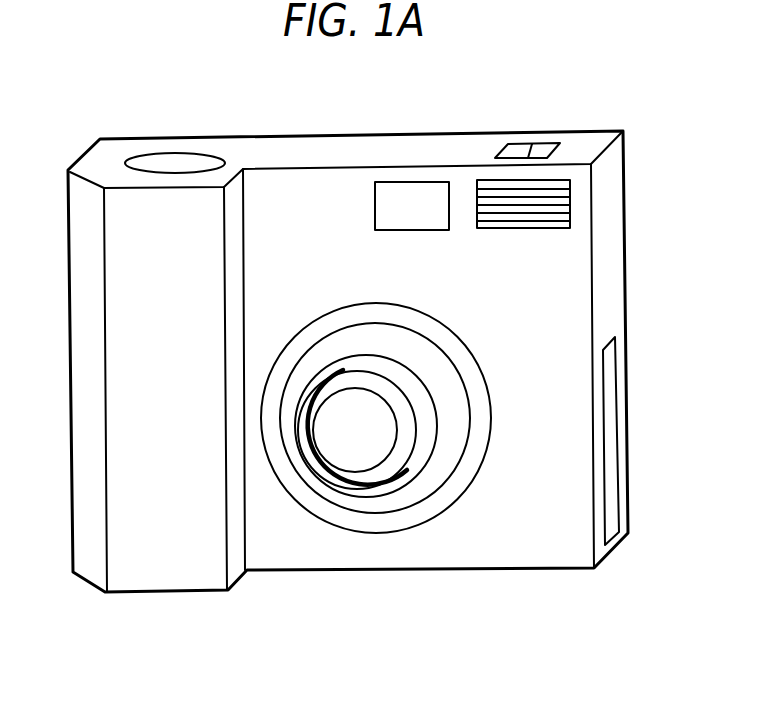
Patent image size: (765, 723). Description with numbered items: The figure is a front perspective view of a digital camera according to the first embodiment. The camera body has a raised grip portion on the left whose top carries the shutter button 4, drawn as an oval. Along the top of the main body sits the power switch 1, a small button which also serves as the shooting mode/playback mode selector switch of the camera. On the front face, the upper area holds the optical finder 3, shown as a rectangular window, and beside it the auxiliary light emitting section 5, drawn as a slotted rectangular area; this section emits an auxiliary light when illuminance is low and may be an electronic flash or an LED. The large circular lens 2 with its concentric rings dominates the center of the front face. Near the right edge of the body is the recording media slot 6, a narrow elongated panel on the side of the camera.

The power switch 1 is at (532, 142).
The lens 2 is at (357, 482).
The optical finder 3 is at (397, 197).
The shutter button 4 is at (173, 165).
The auxiliary light emitting section 5 is at (572, 205).
The recording media slot 6 is at (612, 440).